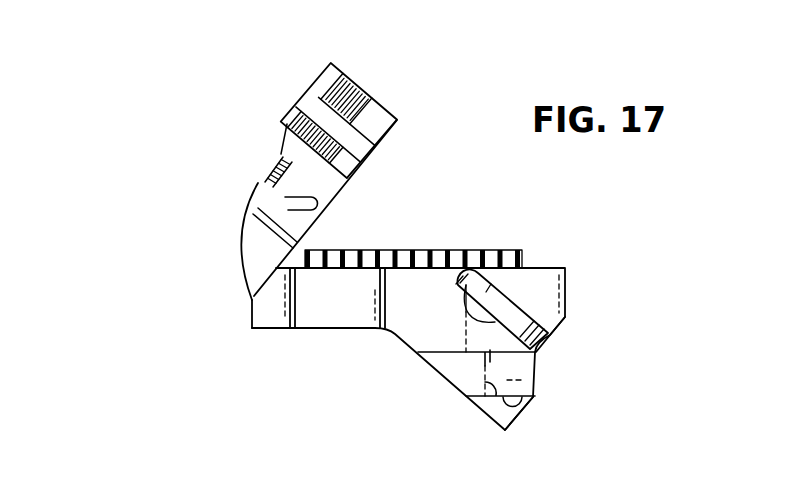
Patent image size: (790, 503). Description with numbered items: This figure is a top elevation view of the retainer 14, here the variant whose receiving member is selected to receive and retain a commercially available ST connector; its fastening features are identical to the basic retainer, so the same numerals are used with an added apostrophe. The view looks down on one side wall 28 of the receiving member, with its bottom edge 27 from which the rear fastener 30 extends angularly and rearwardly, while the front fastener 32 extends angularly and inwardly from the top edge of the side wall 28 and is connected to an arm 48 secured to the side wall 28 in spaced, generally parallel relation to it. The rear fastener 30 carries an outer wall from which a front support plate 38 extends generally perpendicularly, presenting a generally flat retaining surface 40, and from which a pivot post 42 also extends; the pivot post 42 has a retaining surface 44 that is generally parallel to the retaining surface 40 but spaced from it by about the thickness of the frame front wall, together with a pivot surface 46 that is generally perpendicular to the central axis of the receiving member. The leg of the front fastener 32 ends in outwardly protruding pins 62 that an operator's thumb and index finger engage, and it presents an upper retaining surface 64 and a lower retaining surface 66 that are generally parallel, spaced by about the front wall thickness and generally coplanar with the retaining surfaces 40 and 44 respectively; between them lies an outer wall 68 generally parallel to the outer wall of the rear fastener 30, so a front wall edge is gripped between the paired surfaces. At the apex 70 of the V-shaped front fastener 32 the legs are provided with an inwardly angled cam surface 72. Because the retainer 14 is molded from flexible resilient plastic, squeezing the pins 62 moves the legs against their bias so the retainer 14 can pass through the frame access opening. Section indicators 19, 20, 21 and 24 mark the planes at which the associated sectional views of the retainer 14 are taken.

The retainer 14 is at (130, 226).
The bottom edge 27 is at (298, 328).
The right side wall 28 is at (532, 278).
The rear fastener 30 is at (556, 332).
The front fastener 32 is at (463, 85).
The front support plate 38 is at (475, 278).
The retaining surface 40 is at (465, 305).
The pivot post 42 is at (512, 418).
The retaining surface 44 is at (528, 400).
The pivot surface 46 is at (483, 402).
The arm 48 is at (330, 306).
The pins 62 is at (288, 115).
The upper retaining surface 64 is at (345, 175).
The lower retaining surface 66 is at (285, 197).
The outer wall 68 is at (292, 183).
The apex 70 is at (257, 330).
The cam surface 72 is at (265, 258).
The section line 19- 19 is at (279, 148).
The section line 20- 20 is at (200, 52).
The section line 21- 21 is at (385, 345).
The section line 24- 24 is at (296, 38).